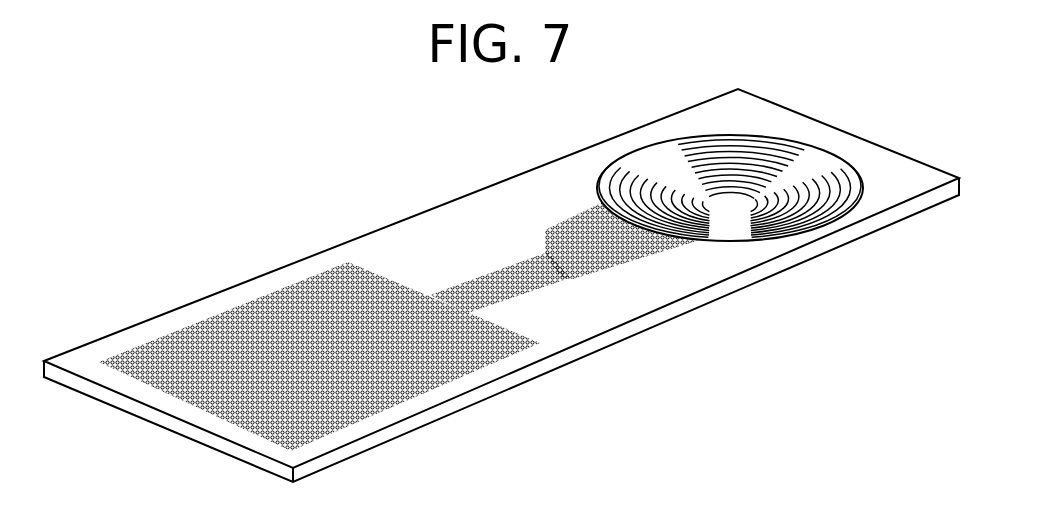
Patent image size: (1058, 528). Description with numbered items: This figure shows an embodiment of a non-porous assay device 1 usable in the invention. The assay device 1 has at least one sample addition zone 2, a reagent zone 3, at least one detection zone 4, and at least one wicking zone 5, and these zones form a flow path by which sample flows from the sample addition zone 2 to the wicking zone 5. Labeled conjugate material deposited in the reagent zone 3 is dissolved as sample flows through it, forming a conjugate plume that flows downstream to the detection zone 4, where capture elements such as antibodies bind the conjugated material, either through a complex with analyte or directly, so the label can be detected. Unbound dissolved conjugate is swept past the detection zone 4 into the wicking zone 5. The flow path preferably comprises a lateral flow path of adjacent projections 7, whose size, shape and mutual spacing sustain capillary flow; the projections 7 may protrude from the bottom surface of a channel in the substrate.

The assay device 1 is at (402, 167).
The sample addition zone 2 is at (715, 163).
The reagent zone 3 is at (587, 237).
The detection zone 4 is at (493, 273).
The wicking zone 5 is at (225, 322).
The projections 7 is at (542, 345).